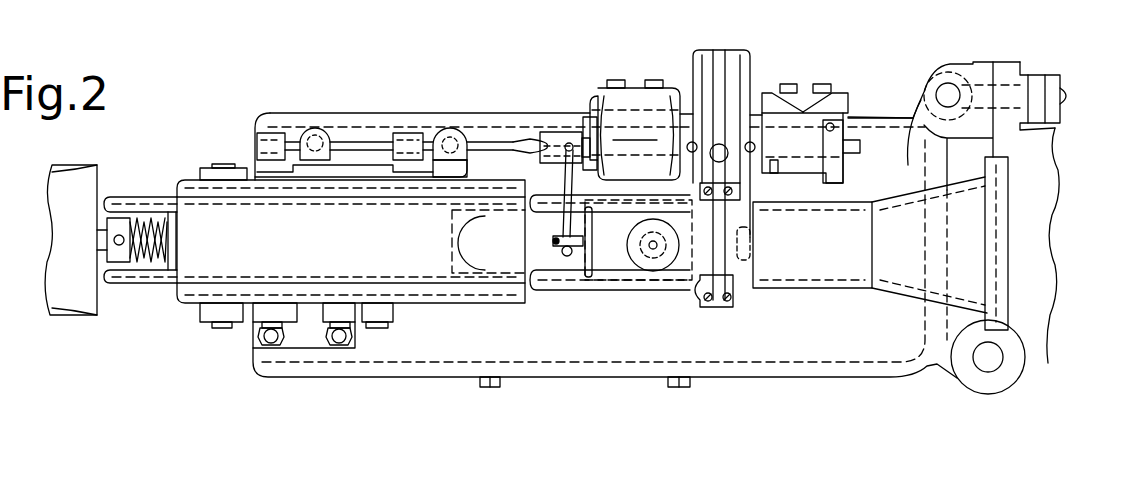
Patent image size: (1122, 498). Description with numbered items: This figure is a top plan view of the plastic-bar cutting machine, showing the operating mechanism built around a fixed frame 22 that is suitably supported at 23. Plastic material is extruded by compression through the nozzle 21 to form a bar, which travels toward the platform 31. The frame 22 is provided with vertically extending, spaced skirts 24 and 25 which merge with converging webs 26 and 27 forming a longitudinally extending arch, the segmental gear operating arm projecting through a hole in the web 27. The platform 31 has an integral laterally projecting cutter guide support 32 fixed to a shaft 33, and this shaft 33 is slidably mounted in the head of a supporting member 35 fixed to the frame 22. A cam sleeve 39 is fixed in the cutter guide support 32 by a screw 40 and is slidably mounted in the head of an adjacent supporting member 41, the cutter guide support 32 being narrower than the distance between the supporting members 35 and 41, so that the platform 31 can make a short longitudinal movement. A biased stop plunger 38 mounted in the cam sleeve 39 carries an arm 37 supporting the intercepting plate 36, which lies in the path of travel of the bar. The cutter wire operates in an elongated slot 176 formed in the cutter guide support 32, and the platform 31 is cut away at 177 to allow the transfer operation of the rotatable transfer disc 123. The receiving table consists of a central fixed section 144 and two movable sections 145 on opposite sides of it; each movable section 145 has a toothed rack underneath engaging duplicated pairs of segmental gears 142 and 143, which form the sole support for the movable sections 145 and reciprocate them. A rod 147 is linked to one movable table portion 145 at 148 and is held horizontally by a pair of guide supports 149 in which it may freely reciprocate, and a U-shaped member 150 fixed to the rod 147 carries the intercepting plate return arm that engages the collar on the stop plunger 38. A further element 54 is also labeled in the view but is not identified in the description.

The nozzle 21 is at (962, 247).
The fixed frame 22 is at (896, 392).
The frame support 23 is at (1033, 178).
The skirt 24 is at (770, 372).
The skirt 25 is at (857, 122).
The web 26 is at (833, 328).
The web 27 is at (870, 160).
The platform 31 is at (683, 278).
The cutter guide support 32 is at (698, 90).
The shaft 33 is at (773, 148).
The supporting member 35 is at (815, 100).
The intercepting plate 36 is at (584, 258).
The arm 37 is at (571, 163).
The stop plunger 38 is at (530, 147).
The cam sleeve 39 is at (592, 126).
The screw 40 is at (690, 141).
The supporting member 41 is at (620, 105).
The screw 54 is at (752, 142).
The transfer disc 123 is at (650, 264).
The segmental gear 142 is at (222, 172).
The segmental gear 143 is at (377, 307).
The central fixed section 144 is at (200, 262).
The movable section 145 is at (188, 192).
The rod 147 is at (365, 150).
The link point 148 is at (270, 150).
The guide support 149 is at (320, 132).
The U-shaped member 150 is at (410, 140).
The elongated slot 176 is at (692, 300).
The cut-away portion 177 is at (617, 263).